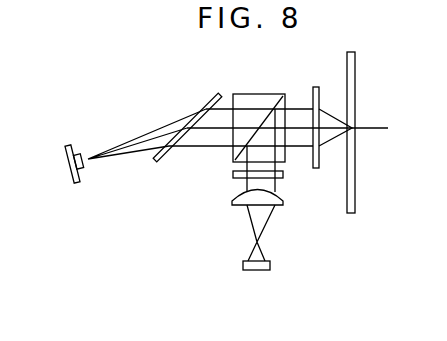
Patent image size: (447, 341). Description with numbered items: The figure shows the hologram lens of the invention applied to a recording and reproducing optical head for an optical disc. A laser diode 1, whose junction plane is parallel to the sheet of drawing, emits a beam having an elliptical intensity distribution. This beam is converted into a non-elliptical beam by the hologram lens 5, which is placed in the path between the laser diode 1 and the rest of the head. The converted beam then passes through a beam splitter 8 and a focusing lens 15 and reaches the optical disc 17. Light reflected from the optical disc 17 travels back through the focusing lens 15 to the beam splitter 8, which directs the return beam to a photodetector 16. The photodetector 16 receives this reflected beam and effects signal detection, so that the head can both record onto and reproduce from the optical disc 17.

The laser diode 1 is at (63, 158).
The hologram lens 5 is at (161, 158).
The beam splitter 8 is at (250, 94).
The focusing lens 15 is at (316, 87).
The photodetector 16 is at (270, 265).
The optical disc 17 is at (355, 72).